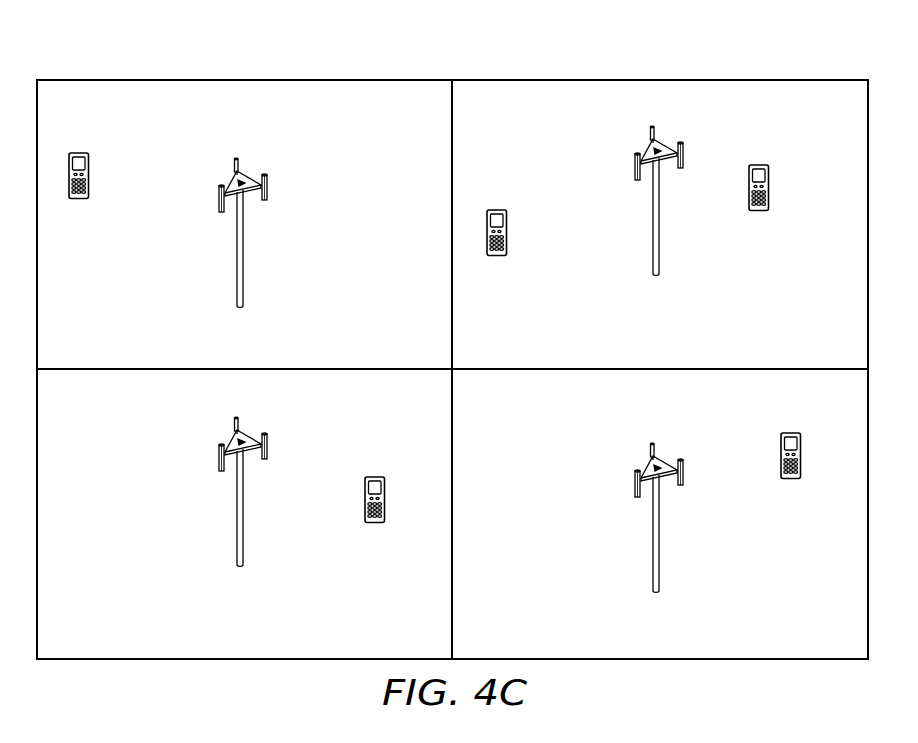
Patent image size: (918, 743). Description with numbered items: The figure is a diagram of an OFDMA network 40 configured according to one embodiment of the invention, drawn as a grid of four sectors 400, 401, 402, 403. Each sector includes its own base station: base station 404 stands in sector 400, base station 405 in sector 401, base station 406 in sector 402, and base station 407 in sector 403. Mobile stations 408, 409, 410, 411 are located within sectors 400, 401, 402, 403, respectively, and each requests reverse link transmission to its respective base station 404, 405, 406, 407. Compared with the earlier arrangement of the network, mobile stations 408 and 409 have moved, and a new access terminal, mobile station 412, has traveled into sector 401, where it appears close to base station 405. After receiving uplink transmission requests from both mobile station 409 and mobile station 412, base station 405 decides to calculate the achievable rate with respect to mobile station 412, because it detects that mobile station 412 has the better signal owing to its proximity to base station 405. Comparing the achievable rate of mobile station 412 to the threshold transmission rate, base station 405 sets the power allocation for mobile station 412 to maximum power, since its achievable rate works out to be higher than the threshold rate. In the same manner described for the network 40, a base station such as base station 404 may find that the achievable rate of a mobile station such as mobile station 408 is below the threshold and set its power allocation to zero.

The OFDMA network 40 is at (270, 65).
The sector 400 is at (92, 356).
The sector 401 is at (507, 356).
The sector 402 is at (92, 646).
The sector 403 is at (507, 646).
The base station 404 is at (237, 250).
The base station 405 is at (653, 217).
The base station 406 is at (238, 508).
The base station 407 is at (653, 535).
The mobile station 408 is at (82, 199).
The mobile station 409 is at (493, 208).
The mobile station 410 is at (374, 523).
The mobile station 411 is at (790, 479).
The mobile station 412 is at (762, 211).